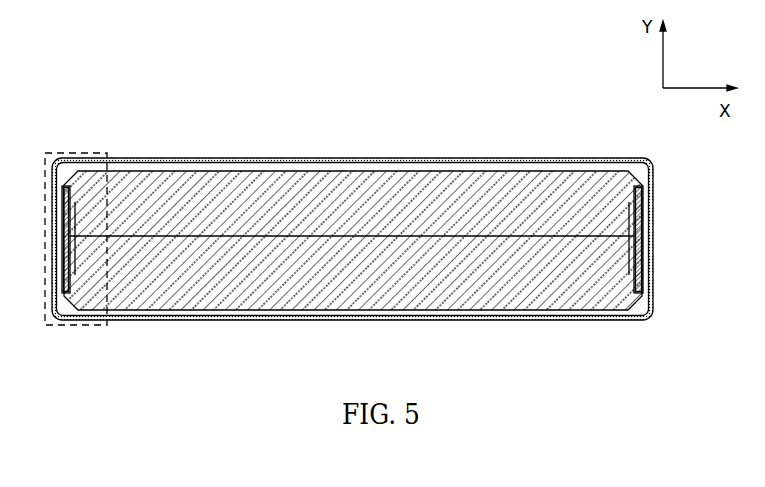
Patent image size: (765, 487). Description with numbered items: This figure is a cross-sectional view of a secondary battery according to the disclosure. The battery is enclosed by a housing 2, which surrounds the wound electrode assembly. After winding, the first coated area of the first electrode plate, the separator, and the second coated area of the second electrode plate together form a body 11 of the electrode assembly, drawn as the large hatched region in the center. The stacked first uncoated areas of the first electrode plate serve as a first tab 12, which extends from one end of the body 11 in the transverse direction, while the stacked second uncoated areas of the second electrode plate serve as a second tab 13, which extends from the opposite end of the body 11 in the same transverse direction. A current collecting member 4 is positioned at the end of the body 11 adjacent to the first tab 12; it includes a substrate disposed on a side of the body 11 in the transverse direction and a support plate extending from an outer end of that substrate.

The housing 2 is at (337, 162).
The current collecting member 4 is at (63, 238).
The body 11 is at (203, 169).
The first tab 12 is at (60, 158).
The second tab 13 is at (650, 170).